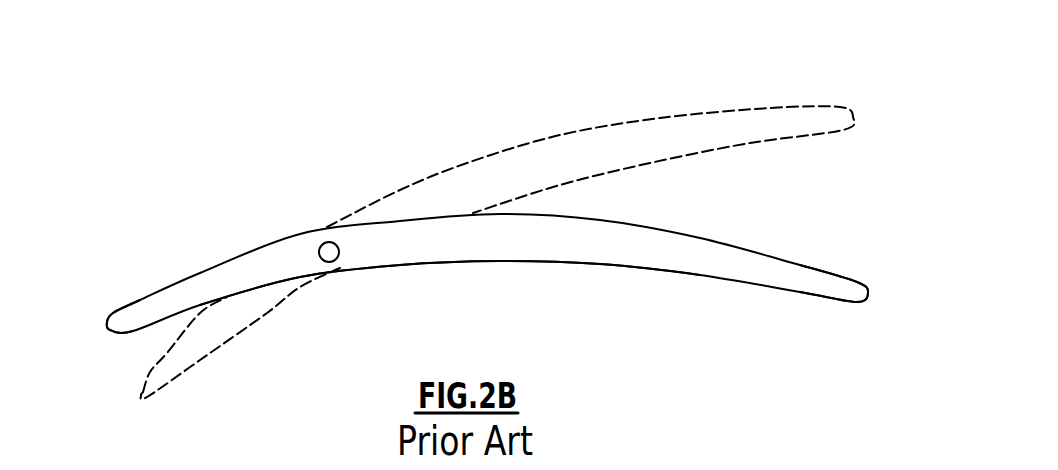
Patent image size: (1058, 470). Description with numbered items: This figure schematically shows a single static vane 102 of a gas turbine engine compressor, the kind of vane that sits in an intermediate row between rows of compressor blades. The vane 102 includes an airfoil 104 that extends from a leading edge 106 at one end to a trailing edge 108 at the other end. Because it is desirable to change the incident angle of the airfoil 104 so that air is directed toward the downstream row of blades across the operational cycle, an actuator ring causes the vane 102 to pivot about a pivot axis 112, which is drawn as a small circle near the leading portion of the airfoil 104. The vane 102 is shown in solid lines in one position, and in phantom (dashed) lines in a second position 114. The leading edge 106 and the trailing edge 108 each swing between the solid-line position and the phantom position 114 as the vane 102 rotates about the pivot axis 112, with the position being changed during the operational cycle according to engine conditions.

The static vane 102 is at (525, 228).
The airfoil 104 is at (536, 262).
The leading edge 106 is at (106, 322).
The trailing edge 108 is at (870, 295).
The pivot axis 112 is at (322, 252).
The position illustrated in phantom 114 is at (772, 108).